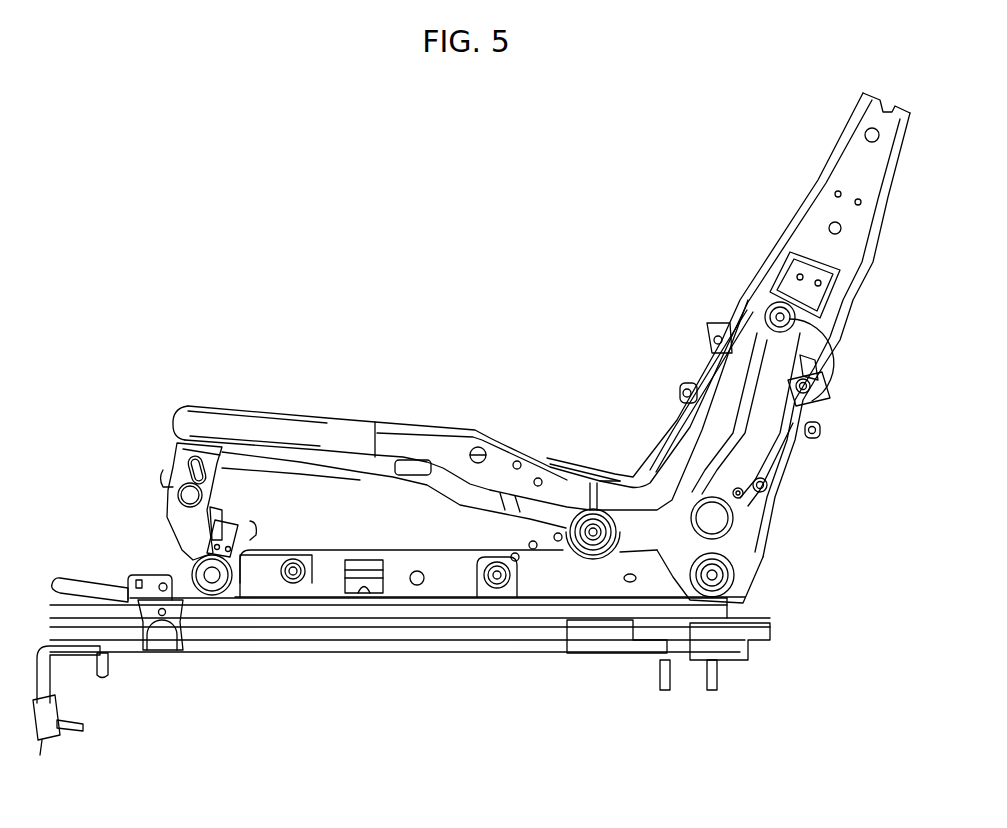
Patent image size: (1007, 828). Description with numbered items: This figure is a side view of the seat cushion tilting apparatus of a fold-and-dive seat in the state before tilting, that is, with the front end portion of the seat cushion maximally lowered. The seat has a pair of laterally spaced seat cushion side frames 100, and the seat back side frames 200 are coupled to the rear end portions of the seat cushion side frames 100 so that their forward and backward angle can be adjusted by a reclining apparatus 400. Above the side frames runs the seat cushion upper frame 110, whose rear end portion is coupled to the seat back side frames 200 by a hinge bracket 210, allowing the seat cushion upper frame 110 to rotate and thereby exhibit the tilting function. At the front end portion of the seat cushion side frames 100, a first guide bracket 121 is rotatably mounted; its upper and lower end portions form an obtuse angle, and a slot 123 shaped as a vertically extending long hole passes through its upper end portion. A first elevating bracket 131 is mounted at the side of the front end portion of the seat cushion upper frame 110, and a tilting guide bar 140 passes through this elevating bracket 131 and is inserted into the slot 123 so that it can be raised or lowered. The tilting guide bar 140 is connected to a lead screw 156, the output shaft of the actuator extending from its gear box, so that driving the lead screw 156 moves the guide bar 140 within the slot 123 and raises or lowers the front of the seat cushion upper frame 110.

The seat cushion side frames 100 is at (253, 585).
The seat cushion upper frame 110 is at (342, 433).
The first guide bracket 121 is at (177, 523).
The slot 123 is at (192, 456).
The first elevating bracket 131 is at (192, 461).
The tilting guide bar 140 is at (183, 493).
The lead screw 156 is at (224, 518).
The seat back side frames 200 is at (822, 207).
The hinge bracket 210 is at (792, 288).
The reclining apparatus 400 is at (808, 352).